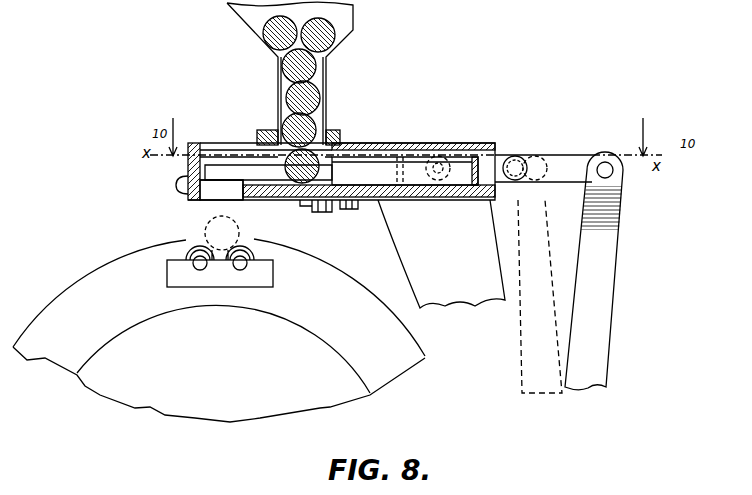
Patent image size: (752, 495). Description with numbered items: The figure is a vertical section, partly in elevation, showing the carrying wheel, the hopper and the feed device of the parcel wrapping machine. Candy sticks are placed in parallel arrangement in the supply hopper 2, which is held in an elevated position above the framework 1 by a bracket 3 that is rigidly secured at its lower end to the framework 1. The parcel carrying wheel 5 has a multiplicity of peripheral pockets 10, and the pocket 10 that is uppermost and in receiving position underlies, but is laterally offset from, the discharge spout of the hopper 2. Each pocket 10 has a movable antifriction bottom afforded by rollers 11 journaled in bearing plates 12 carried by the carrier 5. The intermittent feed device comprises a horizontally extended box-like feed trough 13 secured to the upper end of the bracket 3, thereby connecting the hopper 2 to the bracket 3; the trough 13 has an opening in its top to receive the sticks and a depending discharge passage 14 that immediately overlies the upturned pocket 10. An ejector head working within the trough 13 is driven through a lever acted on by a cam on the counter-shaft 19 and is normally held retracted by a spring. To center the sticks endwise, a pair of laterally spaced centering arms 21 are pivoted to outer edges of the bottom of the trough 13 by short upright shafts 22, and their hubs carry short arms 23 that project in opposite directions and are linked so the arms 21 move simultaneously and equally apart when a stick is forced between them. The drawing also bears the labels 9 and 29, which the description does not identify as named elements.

The framework 1 is at (335, 172).
The supply hopper 2 is at (342, 27).
The bracket 3 is at (470, 282).
The parcel carrying wheel 5 is at (110, 378).
The balls 9 is at (268, 42).
The peripheral pocket 10 is at (541, 166).
The roller 11 is at (593, 254).
The bearing plate 12 is at (185, 280).
The feed trough 13 is at (398, 143).
The discharge passage 14 is at (205, 204).
The counter-shaft 19 is at (446, 150).
The centering arm 21 is at (222, 170).
The upright shaft 22 is at (304, 202).
The short arm 23 is at (325, 212).
The fitting 29 is at (356, 205).